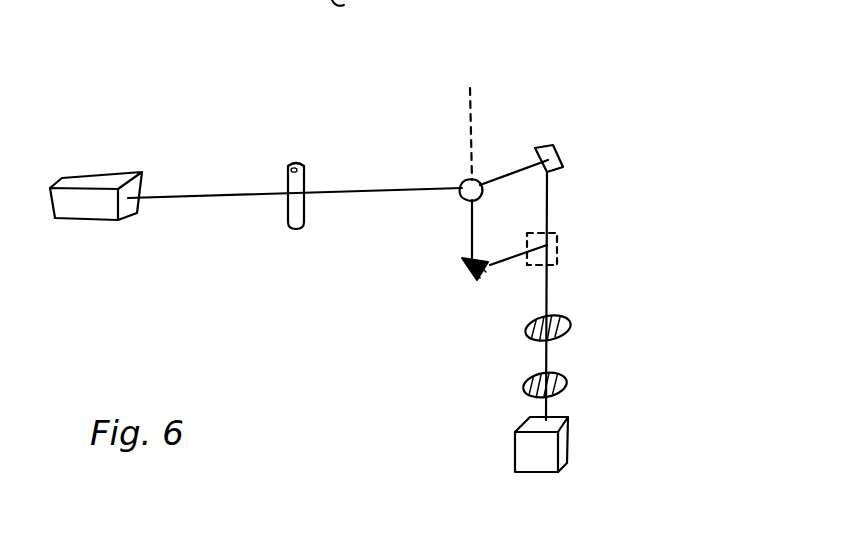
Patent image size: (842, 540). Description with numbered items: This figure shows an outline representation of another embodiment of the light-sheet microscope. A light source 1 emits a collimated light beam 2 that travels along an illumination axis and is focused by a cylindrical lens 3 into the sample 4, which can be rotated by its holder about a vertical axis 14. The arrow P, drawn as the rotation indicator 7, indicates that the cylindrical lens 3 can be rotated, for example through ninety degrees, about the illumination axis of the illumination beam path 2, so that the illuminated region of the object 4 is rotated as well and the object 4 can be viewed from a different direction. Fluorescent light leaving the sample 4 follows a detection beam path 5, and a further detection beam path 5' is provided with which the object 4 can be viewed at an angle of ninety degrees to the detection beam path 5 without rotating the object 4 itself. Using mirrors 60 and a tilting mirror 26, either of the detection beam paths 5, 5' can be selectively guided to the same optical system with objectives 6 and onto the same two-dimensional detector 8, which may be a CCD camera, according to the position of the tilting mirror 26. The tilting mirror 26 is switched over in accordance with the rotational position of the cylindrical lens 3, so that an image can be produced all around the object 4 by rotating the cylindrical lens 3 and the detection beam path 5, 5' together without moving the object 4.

The light source 1 is at (117, 170).
The collimated light beam 2 is at (222, 195).
The cylindrical lens 3 is at (295, 164).
The beam direction indicator 7 is at (336, 205).
The sample 4 is at (465, 183).
The vertical axis 14 is at (464, 122).
The mirrors 60 is at (550, 147).
The detection beam path 5 is at (579, 190).
The further detection beam path 5' is at (440, 233).
The tilting mirror 26 is at (558, 253).
The detection optics 6 is at (577, 325).
The two-dimensional detector 8 is at (568, 442).